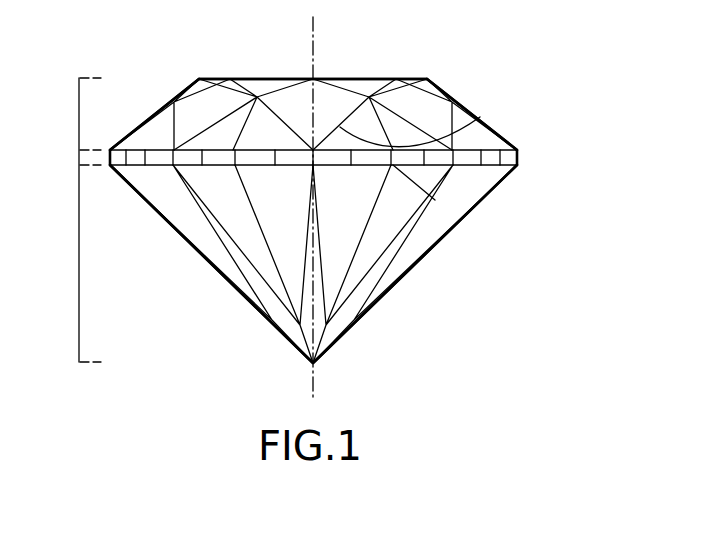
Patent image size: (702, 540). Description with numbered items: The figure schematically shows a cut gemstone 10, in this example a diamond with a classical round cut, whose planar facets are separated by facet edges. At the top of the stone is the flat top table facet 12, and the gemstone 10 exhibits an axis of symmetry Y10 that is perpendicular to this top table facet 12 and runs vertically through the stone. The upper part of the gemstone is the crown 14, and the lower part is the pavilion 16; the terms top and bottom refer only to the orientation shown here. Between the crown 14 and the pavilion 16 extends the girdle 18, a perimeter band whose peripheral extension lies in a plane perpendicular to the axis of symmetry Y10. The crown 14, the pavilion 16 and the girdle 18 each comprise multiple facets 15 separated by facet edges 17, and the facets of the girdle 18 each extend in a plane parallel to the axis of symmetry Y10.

The gemstone 10 is at (313, 198).
The top table facet 12 is at (268, 79).
The crown 14 is at (79, 115).
The facets 15 is at (470, 182).
The pavilion 16 is at (79, 266).
The facet edges 17 is at (333, 165).
The girdle 18 is at (79, 158).
The axis of symmetry Y10 is at (313, 27).